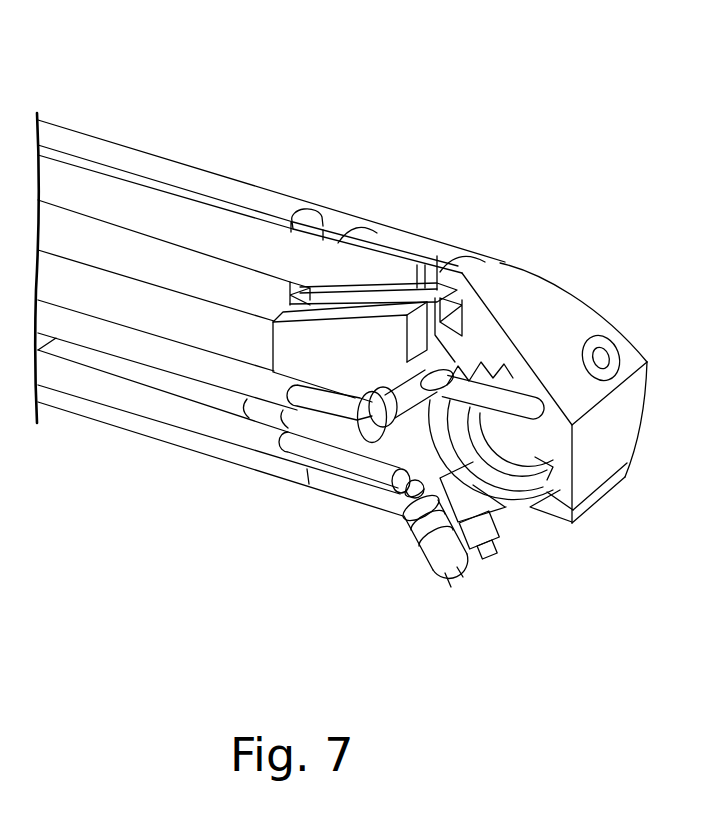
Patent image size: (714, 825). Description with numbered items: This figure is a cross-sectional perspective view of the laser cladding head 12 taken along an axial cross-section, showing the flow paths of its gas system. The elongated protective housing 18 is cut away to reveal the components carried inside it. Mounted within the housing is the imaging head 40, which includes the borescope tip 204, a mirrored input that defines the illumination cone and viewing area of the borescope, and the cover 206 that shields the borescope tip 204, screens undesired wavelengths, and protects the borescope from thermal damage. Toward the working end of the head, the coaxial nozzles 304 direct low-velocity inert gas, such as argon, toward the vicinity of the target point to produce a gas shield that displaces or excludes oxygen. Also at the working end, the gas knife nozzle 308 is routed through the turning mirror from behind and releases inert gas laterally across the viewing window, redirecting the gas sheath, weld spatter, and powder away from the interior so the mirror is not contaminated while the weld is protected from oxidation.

The laser cladding head 12 is at (226, 172).
The protective housing 18 is at (117, 155).
The imaging head 40 is at (375, 243).
The borescope tip 204 is at (380, 268).
The cover 206 is at (343, 300).
The coaxial nozzles 304 is at (507, 523).
The gas knife nozzle 308 is at (520, 405).